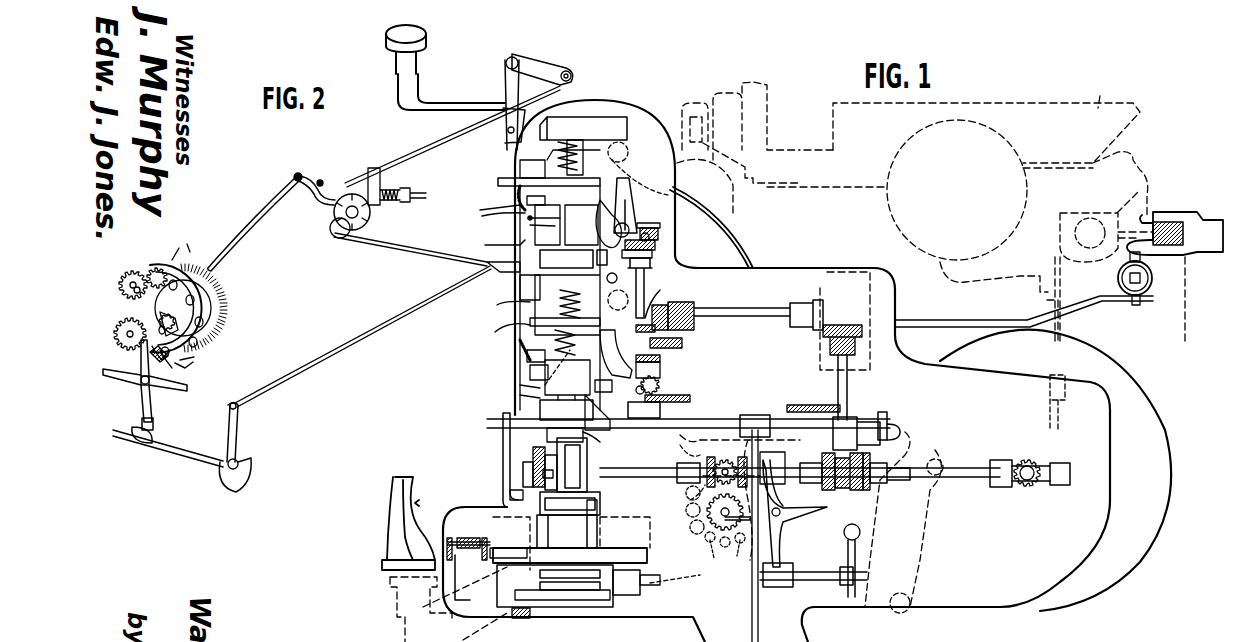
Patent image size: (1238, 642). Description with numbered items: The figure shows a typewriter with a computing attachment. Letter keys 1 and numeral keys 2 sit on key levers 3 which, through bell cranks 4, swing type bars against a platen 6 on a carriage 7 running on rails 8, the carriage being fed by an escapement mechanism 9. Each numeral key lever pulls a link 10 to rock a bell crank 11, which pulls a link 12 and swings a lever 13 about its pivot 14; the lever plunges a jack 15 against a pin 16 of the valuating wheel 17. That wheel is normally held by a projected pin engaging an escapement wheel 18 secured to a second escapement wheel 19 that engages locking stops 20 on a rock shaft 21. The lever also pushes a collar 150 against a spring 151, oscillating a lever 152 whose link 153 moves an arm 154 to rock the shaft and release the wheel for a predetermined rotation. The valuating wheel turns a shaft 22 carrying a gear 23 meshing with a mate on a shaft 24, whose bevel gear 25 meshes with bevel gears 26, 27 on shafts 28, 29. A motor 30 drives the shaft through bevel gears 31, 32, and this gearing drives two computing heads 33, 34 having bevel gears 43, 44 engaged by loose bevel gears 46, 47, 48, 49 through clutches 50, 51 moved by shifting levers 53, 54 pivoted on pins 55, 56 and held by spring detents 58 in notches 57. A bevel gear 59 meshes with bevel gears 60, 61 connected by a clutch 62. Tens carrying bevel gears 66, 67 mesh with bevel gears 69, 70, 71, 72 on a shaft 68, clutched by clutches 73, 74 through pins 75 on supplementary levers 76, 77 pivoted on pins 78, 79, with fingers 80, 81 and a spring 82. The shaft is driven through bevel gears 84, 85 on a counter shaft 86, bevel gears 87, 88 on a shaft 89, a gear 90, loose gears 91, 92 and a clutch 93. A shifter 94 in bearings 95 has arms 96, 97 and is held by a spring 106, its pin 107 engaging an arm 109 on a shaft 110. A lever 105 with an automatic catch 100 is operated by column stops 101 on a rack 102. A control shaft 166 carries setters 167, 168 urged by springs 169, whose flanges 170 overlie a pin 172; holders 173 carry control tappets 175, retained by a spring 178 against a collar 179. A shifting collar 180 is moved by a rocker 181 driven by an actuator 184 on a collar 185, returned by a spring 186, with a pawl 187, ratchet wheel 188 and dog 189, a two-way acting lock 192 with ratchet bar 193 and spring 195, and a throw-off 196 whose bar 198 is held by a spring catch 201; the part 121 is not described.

In FIG. 1, the letter keys 1 is at (455, 585).
In FIG. 2, the numeral keys 2 is at (425, 37).
In FIG. 1, the numeral keys 2 is at (598, 505).
In FIG. 1, the key levers 3 is at (675, 577).
In FIG. 1, the bell cranks 4 is at (912, 553).
In FIG. 1, the platen 6 is at (1005, 145).
In FIG. 1, the carriage 7 is at (1100, 104).
In FIG. 1, the rails 8 is at (1090, 233).
In FIG. 1, the escapement mechanism 9 is at (1060, 372).
In FIG. 2, the link 10 is at (506, 82).
In FIG. 2, the bell crank 11 is at (544, 62).
In FIG. 2, the link 12 is at (452, 146).
In FIG. 2, the lever 13 is at (315, 197).
In FIG. 2, the pivot 14 is at (322, 182).
In FIG. 2, the jack 15 is at (266, 226).
In FIG. 2, the pins 16 is at (178, 262).
In FIG. 1, the pins 16 is at (716, 545).
In FIG. 2, the valuating wheel 17 is at (226, 292).
In FIG. 1, the valuating wheel 17 is at (686, 511).
In FIG. 2, the escapement wheel 18 is at (193, 358).
In FIG. 1, the escapement wheel 18 is at (790, 518).
In FIG. 2, the escapement wheel 19 is at (130, 383).
In FIG. 1, the escapement wheel 19 is at (784, 545).
In FIG. 2, the locking stops 20 is at (153, 426).
In FIG. 1, the locking stops 20 is at (779, 587).
In FIG. 2, the rock shaft 21 is at (170, 453).
In FIG. 1, the rock shaft 21 is at (742, 576).
In FIG. 2, the shaft 22 is at (168, 320).
In FIG. 2, the gear 23 is at (119, 272).
In FIG. 1, the gear 23 is at (700, 500).
In FIG. 2, the shaft 24 is at (132, 290).
In FIG. 1, the bevel gear 25 is at (724, 456).
In FIG. 1, the bevel gear 26 is at (815, 455).
In FIG. 1, the bevel gear 27 is at (760, 462).
In FIG. 1, the shaft 28 is at (648, 452).
In FIG. 1, the shaft 29 is at (980, 472).
In FIG. 1, the motor 30 is at (1166, 445).
In FIG. 1, the bevel gear 31 is at (1035, 462).
In FIG. 1, the bevel gear 32 is at (1018, 486).
In FIG. 1, the computing head 33 is at (582, 147).
In FIG. 1, the computing head 34 is at (525, 284).
In FIG. 1, the bevel gear 43 is at (527, 198).
In FIG. 1, the bevel gear 44 is at (520, 340).
In FIG. 1, the bevel gear 46 is at (530, 178).
In FIG. 1, the bevel gear 47 is at (528, 219).
In FIG. 1, the bevel gear 48 is at (530, 320).
In FIG. 1, the bevel gear 49 is at (530, 370).
In FIG. 1, the clutch 50 is at (486, 209).
In FIG. 1, the clutch 51 is at (527, 354).
In FIG. 1, the shifting lever 53 is at (498, 216).
In FIG. 1, the shifting lever 54 is at (496, 331).
In FIG. 1, the pin 55 is at (610, 270).
In FIG. 1, the pin 56 is at (605, 391).
In FIG. 1, the notches 57 is at (578, 248).
In FIG. 1, the spring detents 58 is at (607, 229).
In FIG. 1, the bevel gear 59 is at (533, 458).
In FIG. 1, the bevel gear 60 is at (523, 466).
In FIG. 1, the bevel gear 61 is at (587, 472).
In FIG. 1, the clutch 62 is at (543, 476).
In FIG. 1, the bevel gear 66 is at (650, 238).
In FIG. 1, the bevel gear 67 is at (660, 384).
In FIG. 1, the shaft 68 is at (650, 292).
In FIG. 1, the bevel gear 69 is at (658, 232).
In FIG. 1, the bevel gear 70 is at (650, 262).
In FIG. 1, the bevel gear 71 is at (655, 372).
In FIG. 1, the bevel gear 72 is at (651, 412).
In FIG. 1, the clutch 73 is at (655, 256).
In FIG. 1, the clutch 74 is at (650, 388).
In FIG. 1, the pins 75 is at (660, 248).
In FIG. 1, the supplementary lever 76 is at (632, 200).
In FIG. 1, the supplementary lever 77 is at (652, 360).
In FIG. 1, the pin 78 is at (650, 222).
In FIG. 1, the pin 79 is at (602, 412).
In FIG. 1, the finger 80 is at (612, 210).
In FIG. 1, the finger 81 is at (577, 331).
In FIG. 1, the spring 82 is at (670, 190).
In FIG. 1, the bevel gear 84 is at (660, 312).
In FIG. 1, the bevel gear 85 is at (680, 305).
In FIG. 1, the counter shaft 86 is at (770, 320).
In FIG. 1, the bevel gear 87 is at (820, 302).
In FIG. 1, the bevel gear 88 is at (843, 326).
In FIG. 1, the shaft 89 is at (848, 390).
In FIG. 1, the gear 90 is at (856, 434).
In FIG. 1, the gear 91 is at (815, 483).
In FIG. 1, the gear 92 is at (882, 484).
In FIG. 1, the clutch 93 is at (850, 479).
In FIG. 1, the shifter 94 is at (880, 414).
In FIG. 1, the bearings 95 is at (888, 425).
In FIG. 1, the arm 96 is at (510, 495).
In FIG. 1, the arm 97 is at (830, 452).
In FIG. 1, the automatic catch 100 is at (1148, 258).
In FIG. 1, the column stops 101 is at (1173, 222).
In FIG. 1, the rack 102 is at (1183, 234).
In FIG. 1, the lever 105 is at (742, 248).
In FIG. 1, the spring 106 is at (816, 405).
In FIG. 1, the pin 107 is at (742, 422).
In FIG. 1, the arm 109 is at (735, 418).
In FIG. 1, the shaft 110 is at (752, 625).
In FIG. 1, the frame 121 is at (263, 632).
In FIG. 2, the collar 150 is at (347, 238).
In FIG. 2, the spring 151 is at (403, 201).
In FIG. 2, the lever 152 is at (424, 245).
In FIG. 2, the link 153 is at (377, 334).
In FIG. 1, the link 153 is at (849, 541).
In FIG. 2, the arm 154 is at (243, 421).
In FIG. 1, the arm 154 is at (853, 566).
In FIG. 1, the control shaft 166 is at (572, 140).
In FIG. 1, the setter 167 is at (520, 166).
In FIG. 1, the setter 168 is at (497, 305).
In FIG. 1, the springs 169 is at (590, 135).
In FIG. 1, the circular flanges 170 is at (518, 193).
In FIG. 1, the pin 172 is at (545, 385).
In FIG. 1, the holder 173 is at (530, 226).
In FIG. 1, the control tappets 175 is at (520, 385).
In FIG. 1, the spring 178 is at (598, 436).
In FIG. 1, the collar 179 is at (610, 445).
In FIG. 1, the shifting collar 180 is at (600, 511).
In FIG. 1, the rocker 181 is at (537, 528).
In FIG. 1, the actuator 184 is at (647, 556).
In FIG. 1, the collar 185 is at (585, 585).
In FIG. 1, the spring 186 is at (566, 600).
In FIG. 1, the pawl 187 is at (512, 612).
In FIG. 1, the ratchet wheel 188 is at (629, 592).
In FIG. 1, the dog 189 is at (648, 586).
In FIG. 1, the two-way acting lock 192 is at (480, 575).
In FIG. 1, the ratchet bar 193 is at (500, 560).
In FIG. 1, the spring 195 is at (466, 538).
In FIG. 1, the throw-off 196 is at (487, 236).
In FIG. 1, the bar 198 is at (582, 300).
In FIG. 1, the spring catch 201 is at (566, 258).